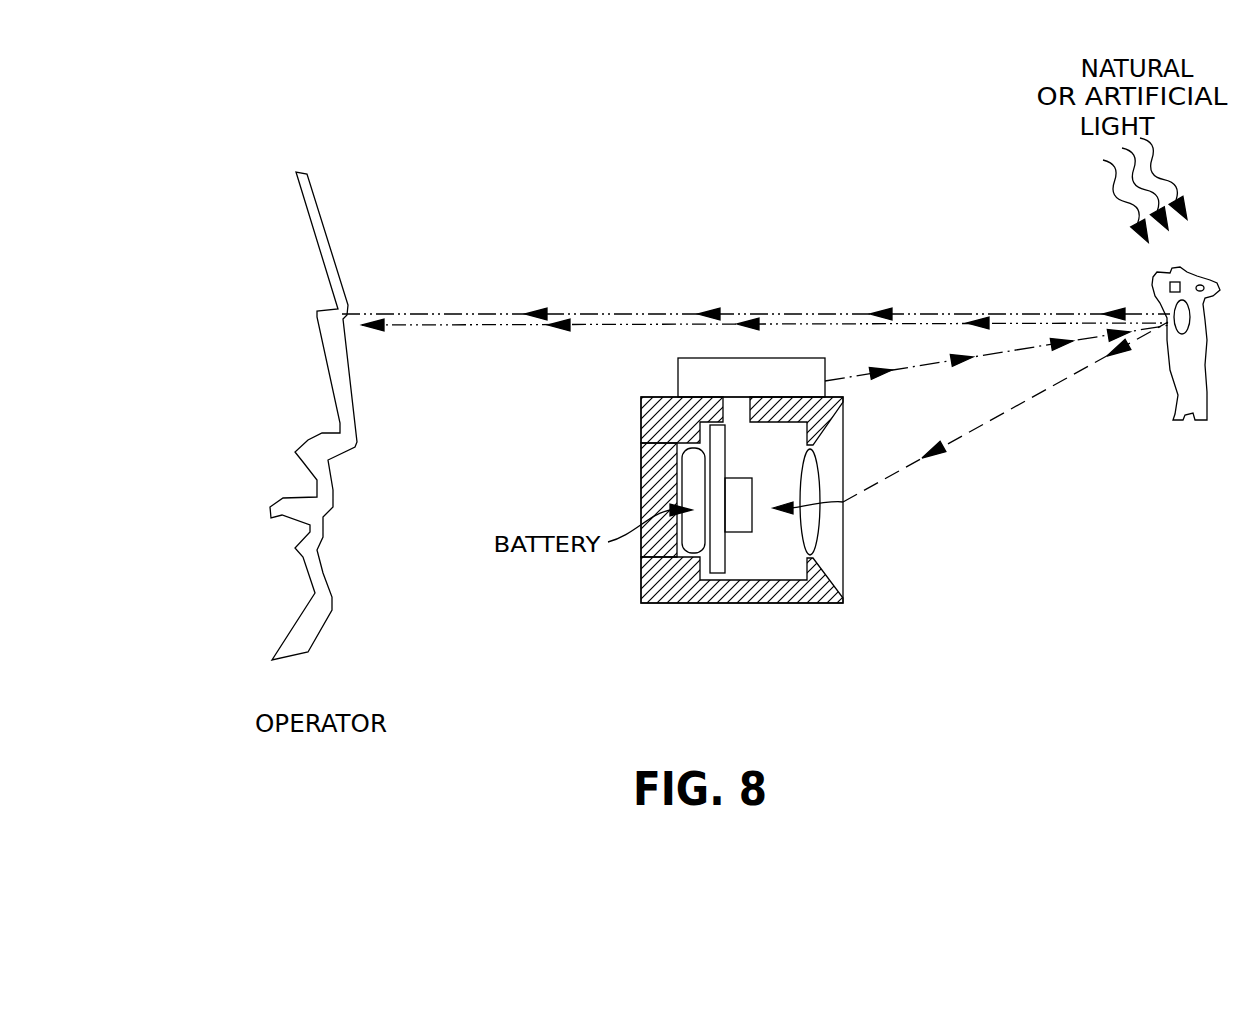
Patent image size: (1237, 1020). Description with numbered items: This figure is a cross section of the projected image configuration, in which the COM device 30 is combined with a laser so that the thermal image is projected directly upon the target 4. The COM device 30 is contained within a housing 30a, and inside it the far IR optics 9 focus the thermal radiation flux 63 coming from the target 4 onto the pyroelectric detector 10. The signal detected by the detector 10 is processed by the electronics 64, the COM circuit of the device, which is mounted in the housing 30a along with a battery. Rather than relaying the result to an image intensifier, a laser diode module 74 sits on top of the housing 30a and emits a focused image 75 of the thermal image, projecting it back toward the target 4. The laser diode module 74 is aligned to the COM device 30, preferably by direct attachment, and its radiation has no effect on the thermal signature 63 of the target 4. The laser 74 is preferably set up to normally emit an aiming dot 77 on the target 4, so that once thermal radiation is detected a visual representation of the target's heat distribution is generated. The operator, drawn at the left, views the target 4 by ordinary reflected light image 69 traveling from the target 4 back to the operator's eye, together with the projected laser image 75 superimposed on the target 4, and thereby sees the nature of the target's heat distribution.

The target 4 is at (1167, 387).
The far IR optics 9 is at (828, 528).
The pyroelectric detector 10 is at (752, 527).
The COM device 30 is at (588, 472).
The housing 30a is at (643, 552).
The thermal radiation flux 63 is at (1012, 413).
The electronics 64 is at (715, 560).
The reflected light image 69 is at (592, 314).
The laser diode module 74 is at (677, 376).
The focused image 75 is at (586, 327).
The aiming dot 77 is at (1152, 303).